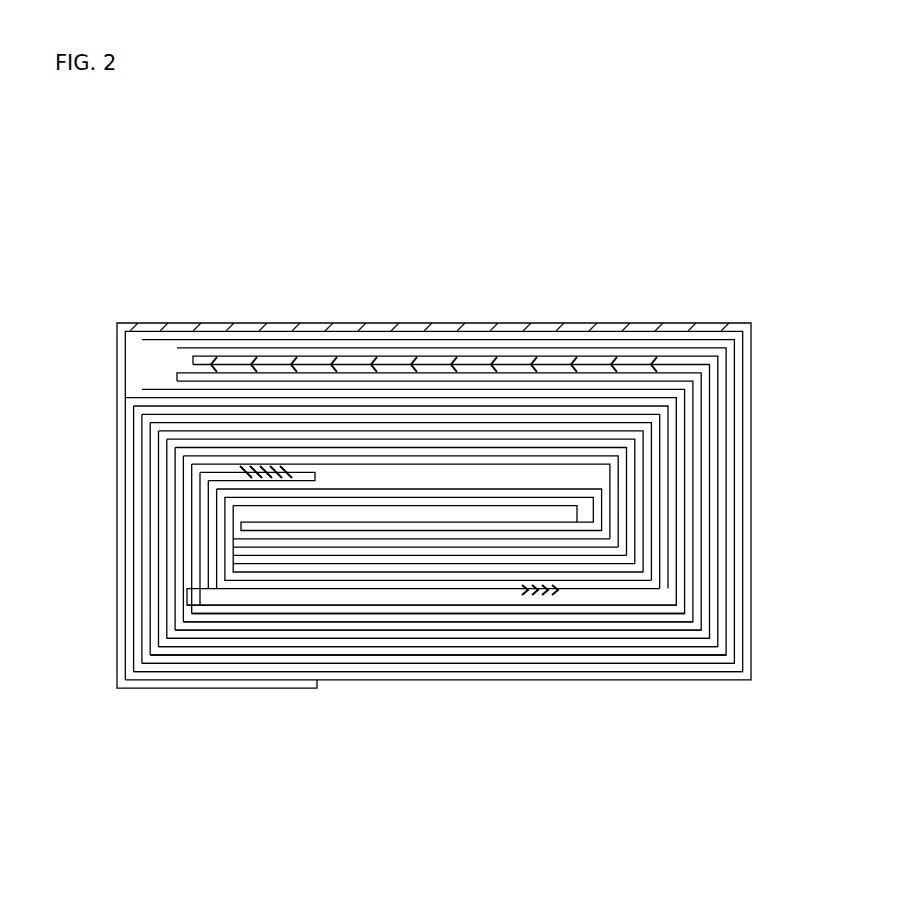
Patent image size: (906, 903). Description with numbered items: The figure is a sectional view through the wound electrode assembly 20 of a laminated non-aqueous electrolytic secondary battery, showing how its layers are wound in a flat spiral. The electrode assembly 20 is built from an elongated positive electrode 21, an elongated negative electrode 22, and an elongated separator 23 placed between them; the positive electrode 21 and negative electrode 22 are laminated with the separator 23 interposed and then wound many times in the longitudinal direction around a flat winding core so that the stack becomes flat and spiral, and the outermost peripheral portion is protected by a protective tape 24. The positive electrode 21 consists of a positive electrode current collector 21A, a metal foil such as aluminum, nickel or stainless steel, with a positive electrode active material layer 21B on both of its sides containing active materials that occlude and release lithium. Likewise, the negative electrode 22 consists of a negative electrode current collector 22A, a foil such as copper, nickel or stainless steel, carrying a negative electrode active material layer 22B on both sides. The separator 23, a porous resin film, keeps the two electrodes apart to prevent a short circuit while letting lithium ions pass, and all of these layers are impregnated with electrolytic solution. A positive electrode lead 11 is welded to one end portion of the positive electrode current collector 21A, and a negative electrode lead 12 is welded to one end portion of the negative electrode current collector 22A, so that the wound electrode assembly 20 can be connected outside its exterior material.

The wound electrode assembly 20 is at (654, 204).
The positive electrode 21 is at (290, 253).
The positive electrode current collector 21A is at (205, 365).
The positive electrode active material layer 21B is at (290, 400).
The negative electrode 22 is at (460, 253).
The negative electrode current collector 22A is at (350, 332).
The negative electrode active material layer 22B is at (457, 400).
The separator 23 is at (603, 353).
The protective tape 24 is at (728, 325).
The positive electrode lead 11 is at (270, 464).
The negative electrode lead 12 is at (545, 607).